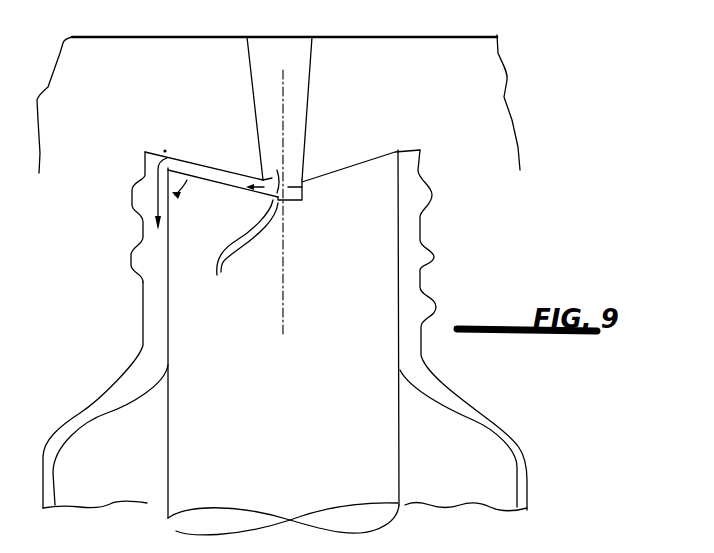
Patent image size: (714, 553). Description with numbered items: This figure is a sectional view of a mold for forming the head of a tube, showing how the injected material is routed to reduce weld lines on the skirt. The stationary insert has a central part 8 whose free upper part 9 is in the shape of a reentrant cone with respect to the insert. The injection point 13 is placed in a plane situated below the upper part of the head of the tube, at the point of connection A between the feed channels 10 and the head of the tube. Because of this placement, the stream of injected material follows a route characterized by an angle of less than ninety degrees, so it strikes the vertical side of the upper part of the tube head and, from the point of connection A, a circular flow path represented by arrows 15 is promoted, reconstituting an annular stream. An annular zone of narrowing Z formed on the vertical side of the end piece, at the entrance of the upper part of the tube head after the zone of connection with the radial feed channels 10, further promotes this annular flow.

The central part 8 is at (200, 333).
The free upper part 9 is at (365, 153).
The feed channels 10 is at (198, 167).
The injection point 13 is at (291, 205).
The arrows 15 is at (193, 190).
The point of connection A is at (157, 149).
The annular zone of narrowing Z is at (143, 183).